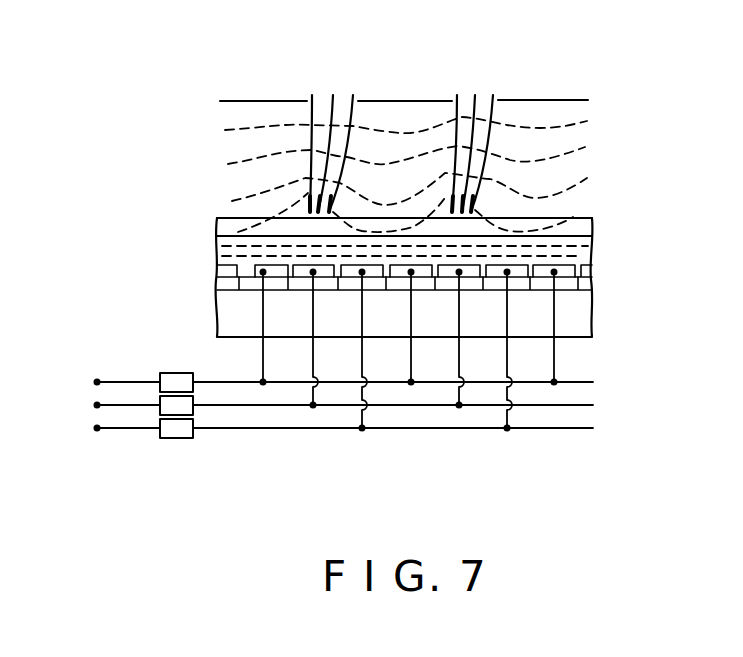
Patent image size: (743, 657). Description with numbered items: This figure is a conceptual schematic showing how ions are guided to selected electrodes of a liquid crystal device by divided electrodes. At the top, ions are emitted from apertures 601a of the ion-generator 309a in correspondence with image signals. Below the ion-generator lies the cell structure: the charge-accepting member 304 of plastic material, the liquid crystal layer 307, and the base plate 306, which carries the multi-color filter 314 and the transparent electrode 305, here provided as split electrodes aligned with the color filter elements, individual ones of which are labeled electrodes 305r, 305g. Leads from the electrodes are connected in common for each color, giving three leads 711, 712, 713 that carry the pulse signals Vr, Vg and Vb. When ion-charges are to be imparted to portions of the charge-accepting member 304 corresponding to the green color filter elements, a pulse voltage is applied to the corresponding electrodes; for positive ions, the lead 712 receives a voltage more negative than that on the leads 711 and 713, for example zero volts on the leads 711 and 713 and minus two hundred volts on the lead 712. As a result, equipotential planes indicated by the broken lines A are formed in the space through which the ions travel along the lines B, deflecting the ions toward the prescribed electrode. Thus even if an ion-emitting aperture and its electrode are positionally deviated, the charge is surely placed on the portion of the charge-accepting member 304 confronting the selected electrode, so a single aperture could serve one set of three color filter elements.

The apertures 601a is at (339, 93).
The ion-generator 309a is at (594, 99).
The ion travel lines B is at (493, 140).
The equipotential planes A is at (590, 181).
The charge-accepting member 304 is at (580, 219).
The liquid crystal layer 307 is at (592, 248).
The transparent electrode 305 is at (400, 283).
The red phosphor element 305r is at (259, 271).
The green phosphor element 305g is at (306, 271).
The multi-color filter 314 is at (590, 282).
The base plate 306 is at (586, 320).
The lead 711 is at (600, 381).
The lead 712 is at (600, 404).
The lead 713 is at (600, 428).